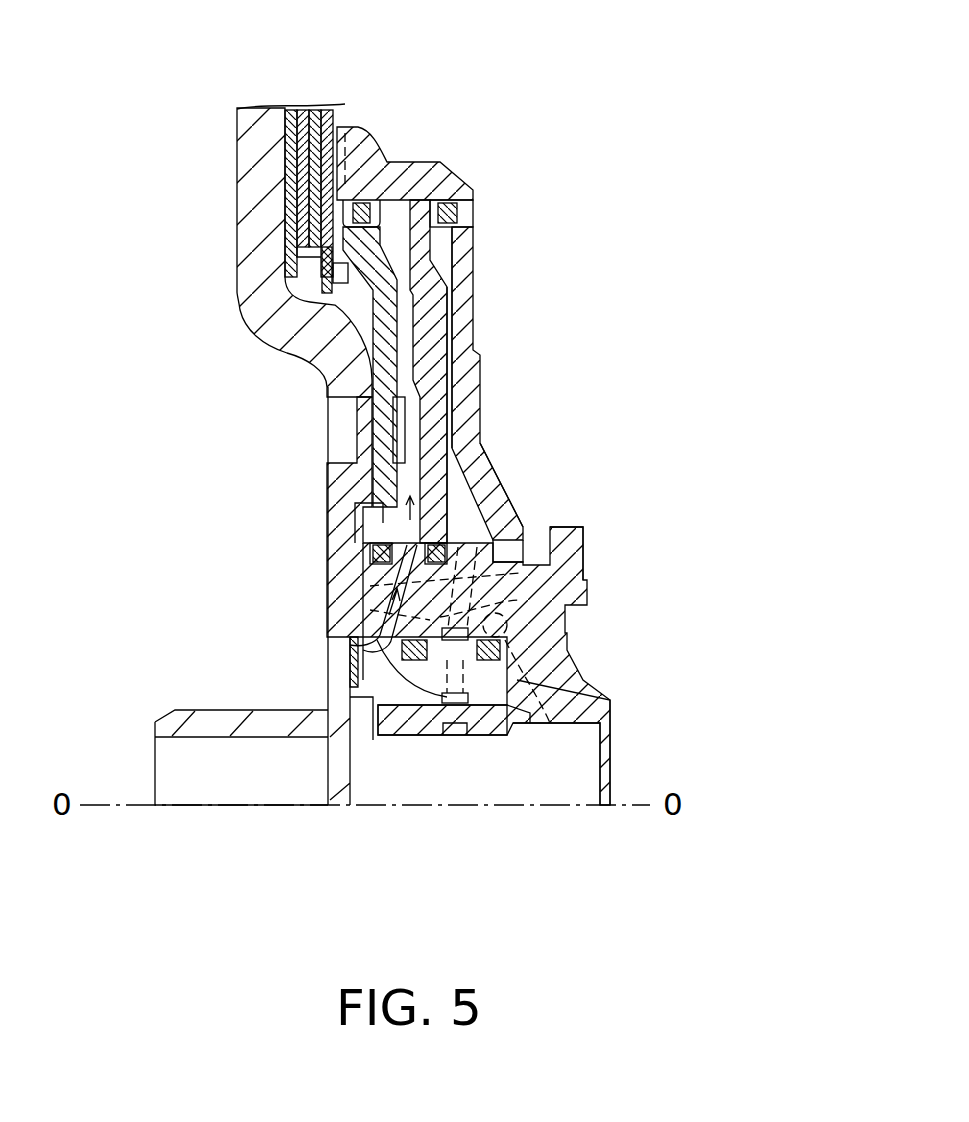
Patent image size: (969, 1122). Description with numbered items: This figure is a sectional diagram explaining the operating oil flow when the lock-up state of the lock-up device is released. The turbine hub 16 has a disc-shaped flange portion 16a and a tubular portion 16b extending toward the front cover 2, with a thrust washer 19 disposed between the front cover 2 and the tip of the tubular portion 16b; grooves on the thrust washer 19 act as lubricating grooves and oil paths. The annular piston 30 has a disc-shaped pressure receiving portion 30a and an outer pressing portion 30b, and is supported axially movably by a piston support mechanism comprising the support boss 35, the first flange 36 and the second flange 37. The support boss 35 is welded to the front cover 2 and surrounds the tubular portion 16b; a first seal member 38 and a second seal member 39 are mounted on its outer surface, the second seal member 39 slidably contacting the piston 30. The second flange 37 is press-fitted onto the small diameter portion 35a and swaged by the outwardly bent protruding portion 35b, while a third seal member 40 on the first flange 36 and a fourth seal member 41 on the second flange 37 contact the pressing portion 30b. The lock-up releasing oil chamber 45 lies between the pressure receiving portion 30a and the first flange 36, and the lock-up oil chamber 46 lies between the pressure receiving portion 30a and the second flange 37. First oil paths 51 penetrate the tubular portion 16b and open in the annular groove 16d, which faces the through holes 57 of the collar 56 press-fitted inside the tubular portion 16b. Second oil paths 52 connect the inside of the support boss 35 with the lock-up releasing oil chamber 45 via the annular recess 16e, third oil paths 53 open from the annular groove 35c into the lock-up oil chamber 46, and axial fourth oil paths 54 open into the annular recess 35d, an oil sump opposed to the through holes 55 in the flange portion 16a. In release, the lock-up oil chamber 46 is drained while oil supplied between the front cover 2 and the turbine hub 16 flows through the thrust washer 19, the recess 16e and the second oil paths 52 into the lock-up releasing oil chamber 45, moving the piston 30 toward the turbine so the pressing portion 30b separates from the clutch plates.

The front cover 2 is at (252, 235).
The turbine hub 16 is at (469, 602).
The flange portion 16a is at (567, 533).
The tubular portion 16b is at (580, 715).
The annular groove 16d is at (407, 720).
The annular recess 16e is at (380, 605).
The thrust washer 19 is at (355, 658).
The piston 30 is at (427, 305).
The pressure receiving portion 30a is at (428, 302).
The pressing portion 30b is at (413, 166).
The support boss 35 is at (457, 615).
The small diameter portion 35a is at (530, 593).
The protruding portion 35b is at (500, 560).
The annular groove 35c is at (365, 697).
The annular recess 35d is at (567, 610).
The first flange 36 is at (392, 320).
The second flange 37 is at (467, 400).
The first seal member 38 is at (372, 500).
The second seal member 39 is at (465, 512).
The third seal member 40 is at (325, 168).
The fourth seal member 41 is at (457, 212).
The lock-up releasing oil chamber 45 is at (407, 388).
The lock-up oil chamber 46 is at (448, 327).
The first oil paths 51 is at (410, 713).
The second oil paths 52 is at (398, 592).
The third oil paths 53 is at (520, 600).
The fourth oil paths 54 is at (505, 640).
The through holes 55 is at (540, 630).
The collar 56 is at (492, 723).
The through holes 57 is at (460, 708).